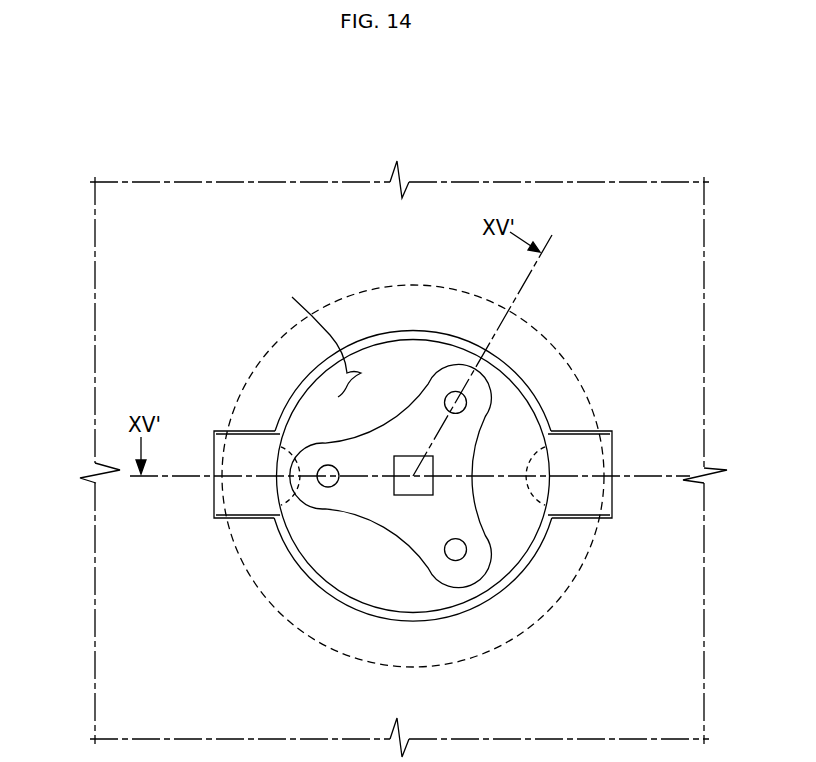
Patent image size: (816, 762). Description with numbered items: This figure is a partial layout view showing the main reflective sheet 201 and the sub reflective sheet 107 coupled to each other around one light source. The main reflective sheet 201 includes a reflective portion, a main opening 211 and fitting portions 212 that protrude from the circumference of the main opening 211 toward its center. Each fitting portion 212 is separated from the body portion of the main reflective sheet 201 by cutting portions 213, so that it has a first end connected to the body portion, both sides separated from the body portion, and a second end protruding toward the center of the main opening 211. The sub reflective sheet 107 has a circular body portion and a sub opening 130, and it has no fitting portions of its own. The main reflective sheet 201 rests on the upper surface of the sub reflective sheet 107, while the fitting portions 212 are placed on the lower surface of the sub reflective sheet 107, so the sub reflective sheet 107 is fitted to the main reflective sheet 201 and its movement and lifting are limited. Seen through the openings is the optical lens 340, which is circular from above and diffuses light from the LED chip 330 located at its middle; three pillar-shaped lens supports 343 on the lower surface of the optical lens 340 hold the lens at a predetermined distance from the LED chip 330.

The main reflective sheet 201 is at (197, 405).
The main opening 211 is at (521, 388).
The sub reflective sheet 107 is at (406, 386).
The fitting portion 212 is at (240, 488).
The cutting portion 213 is at (256, 518).
The optical lens 340 is at (505, 372).
The lens support 343 is at (461, 558).
The LED chip 330 is at (415, 496).
The sub opening 130 is at (377, 521).